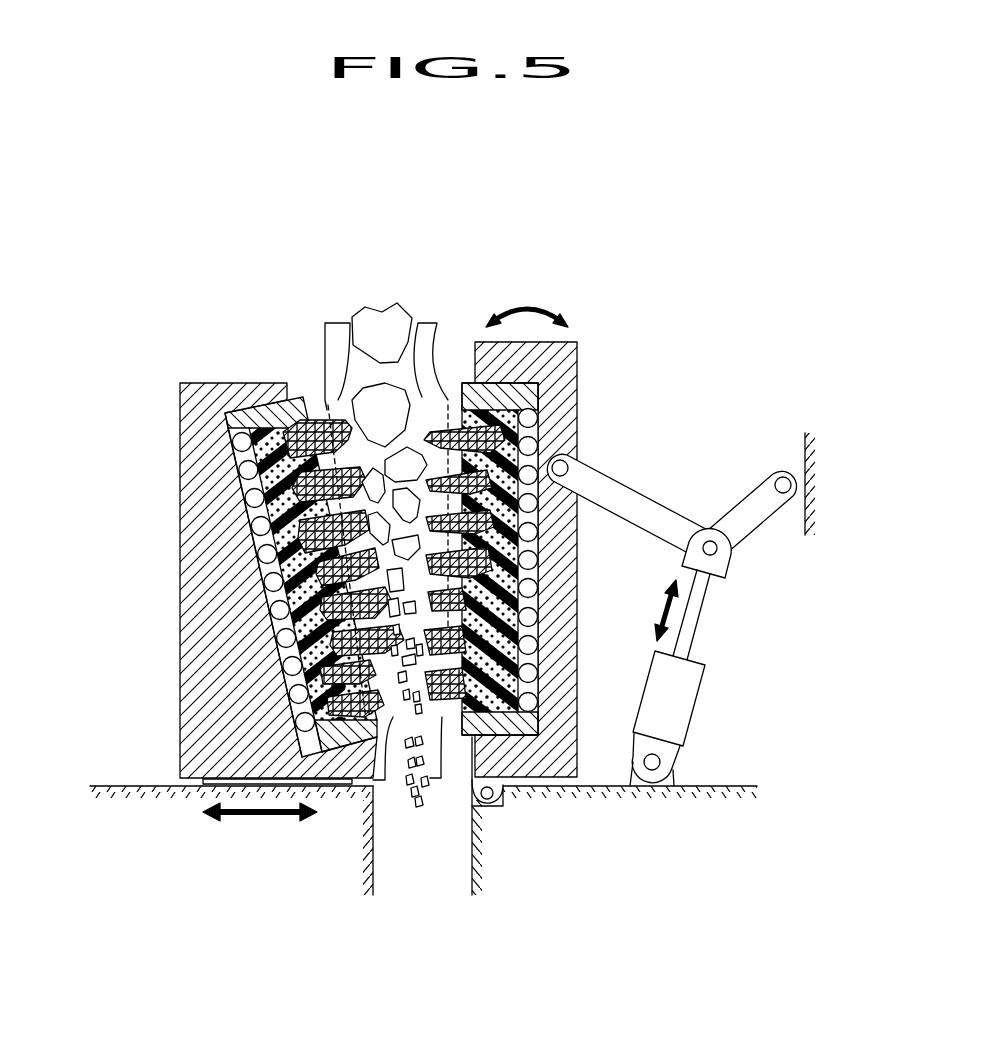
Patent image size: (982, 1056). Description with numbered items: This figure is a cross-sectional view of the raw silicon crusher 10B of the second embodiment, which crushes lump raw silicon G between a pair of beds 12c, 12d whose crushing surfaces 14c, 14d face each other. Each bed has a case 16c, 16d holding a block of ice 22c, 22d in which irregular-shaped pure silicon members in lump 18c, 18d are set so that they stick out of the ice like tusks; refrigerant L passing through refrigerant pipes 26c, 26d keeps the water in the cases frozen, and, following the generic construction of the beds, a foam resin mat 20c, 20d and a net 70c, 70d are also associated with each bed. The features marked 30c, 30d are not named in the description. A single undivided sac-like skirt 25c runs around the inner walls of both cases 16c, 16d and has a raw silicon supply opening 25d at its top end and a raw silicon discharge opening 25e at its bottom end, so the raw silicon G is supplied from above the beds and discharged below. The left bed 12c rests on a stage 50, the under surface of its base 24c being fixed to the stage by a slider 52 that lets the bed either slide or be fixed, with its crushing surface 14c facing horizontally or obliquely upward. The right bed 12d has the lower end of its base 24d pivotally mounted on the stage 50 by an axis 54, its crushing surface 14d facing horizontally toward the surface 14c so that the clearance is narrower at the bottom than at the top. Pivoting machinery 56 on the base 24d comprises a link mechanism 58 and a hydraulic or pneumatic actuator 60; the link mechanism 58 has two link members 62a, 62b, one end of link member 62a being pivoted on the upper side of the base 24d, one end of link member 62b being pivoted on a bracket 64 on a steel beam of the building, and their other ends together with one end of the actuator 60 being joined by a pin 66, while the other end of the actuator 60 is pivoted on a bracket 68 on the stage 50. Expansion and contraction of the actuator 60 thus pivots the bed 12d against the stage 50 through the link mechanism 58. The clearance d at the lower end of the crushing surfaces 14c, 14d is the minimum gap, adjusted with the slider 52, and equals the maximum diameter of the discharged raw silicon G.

The raw silicon crusher 10B is at (143, 208).
The bed 12c is at (178, 316).
The bed 12d is at (590, 292).
The crushing surface 14c is at (332, 396).
The crushing surface 14d is at (418, 396).
The case 16c is at (243, 423).
The case 16d is at (540, 372).
The irregular-shaped pure silicon member in lump 18c is at (285, 545).
The irregular-shaped pure silicon member in lump 18d is at (510, 535).
The foam resin mat 20c is at (303, 625).
The foam resin mat 20d is at (530, 628).
The ice 22c is at (280, 640).
The ice 22d is at (518, 656).
The base 24c is at (266, 588).
The base 24d is at (575, 612).
The skirt 25c is at (325, 388).
The raw silicon supply opening 25d is at (376, 295).
The raw silicon discharge opening 25e is at (421, 797).
The refrigerant pipes 26c is at (262, 447).
The refrigerant pipes 26d is at (510, 390).
The reference line 30c is at (337, 402).
The reference line 30d is at (412, 392).
The stage 50 is at (101, 785).
The slider 52 is at (168, 778).
The axis 54 is at (496, 800).
The pivoting machinery 56 is at (724, 678).
The link mechanism 58 is at (681, 468).
The actuator 60 is at (685, 700).
The link member 62a is at (615, 500).
The link member 62b is at (735, 520).
The bracket 64 is at (795, 466).
The pin 66 is at (728, 550).
The bracket 68 is at (668, 776).
The net 70c is at (278, 505).
The net 70d is at (515, 443).
The raw silicon G is at (362, 320).
The refrigerant L is at (250, 470).
The clearance d is at (395, 713).